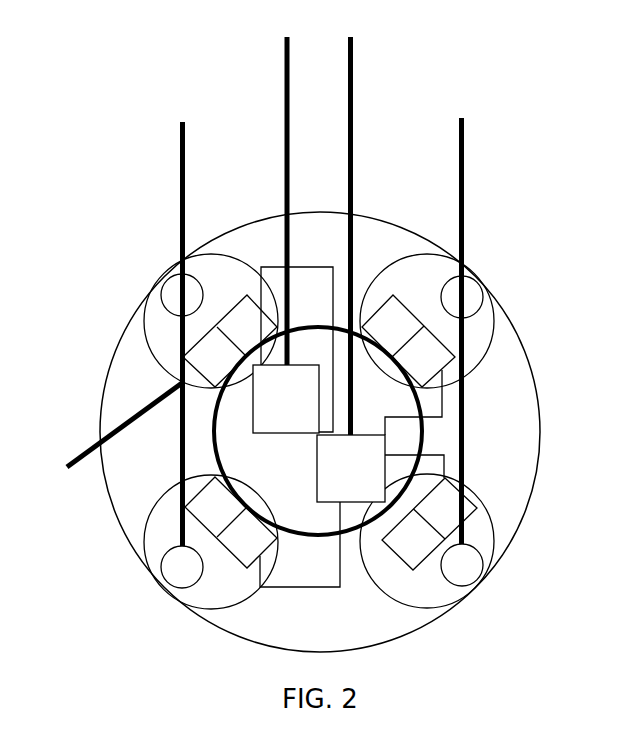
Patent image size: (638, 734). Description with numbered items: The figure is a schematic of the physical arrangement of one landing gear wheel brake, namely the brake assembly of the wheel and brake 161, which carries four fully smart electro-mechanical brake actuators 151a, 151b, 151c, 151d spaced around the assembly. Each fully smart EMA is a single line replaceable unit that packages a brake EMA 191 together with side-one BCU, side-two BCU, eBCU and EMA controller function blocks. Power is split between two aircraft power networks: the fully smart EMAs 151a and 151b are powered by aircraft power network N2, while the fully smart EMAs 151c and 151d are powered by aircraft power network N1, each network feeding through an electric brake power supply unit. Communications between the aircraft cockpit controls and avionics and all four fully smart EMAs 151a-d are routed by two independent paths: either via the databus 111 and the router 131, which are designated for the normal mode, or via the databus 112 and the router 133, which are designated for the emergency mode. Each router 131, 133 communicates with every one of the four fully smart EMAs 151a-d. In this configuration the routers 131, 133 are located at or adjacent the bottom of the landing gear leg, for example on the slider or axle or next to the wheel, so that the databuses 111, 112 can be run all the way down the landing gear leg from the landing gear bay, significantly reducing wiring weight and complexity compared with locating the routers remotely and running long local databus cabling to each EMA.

The databus 111 is at (354, 112).
The databus 112 is at (285, 70).
The router 131 is at (318, 446).
The router 133 is at (258, 420).
The fully smart electro-mechanical brake actuator 151a is at (477, 340).
The fully smart electro-mechanical brake actuator 151b is at (497, 533).
The fully smart electro-mechanical brake actuator 151c is at (158, 328).
The fully smart electro-mechanical brake actuator 151d is at (160, 542).
The wheel and brake 161 is at (513, 438).
The brake EMA 191 is at (72, 460).
The aircraft power network N1 is at (179, 160).
The aircraft power network N2 is at (465, 183).